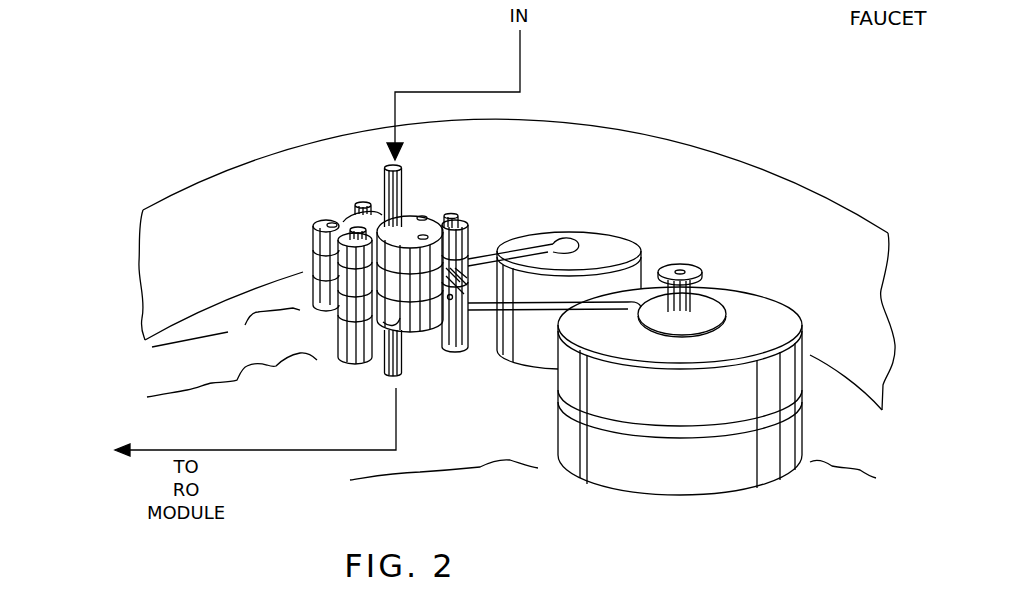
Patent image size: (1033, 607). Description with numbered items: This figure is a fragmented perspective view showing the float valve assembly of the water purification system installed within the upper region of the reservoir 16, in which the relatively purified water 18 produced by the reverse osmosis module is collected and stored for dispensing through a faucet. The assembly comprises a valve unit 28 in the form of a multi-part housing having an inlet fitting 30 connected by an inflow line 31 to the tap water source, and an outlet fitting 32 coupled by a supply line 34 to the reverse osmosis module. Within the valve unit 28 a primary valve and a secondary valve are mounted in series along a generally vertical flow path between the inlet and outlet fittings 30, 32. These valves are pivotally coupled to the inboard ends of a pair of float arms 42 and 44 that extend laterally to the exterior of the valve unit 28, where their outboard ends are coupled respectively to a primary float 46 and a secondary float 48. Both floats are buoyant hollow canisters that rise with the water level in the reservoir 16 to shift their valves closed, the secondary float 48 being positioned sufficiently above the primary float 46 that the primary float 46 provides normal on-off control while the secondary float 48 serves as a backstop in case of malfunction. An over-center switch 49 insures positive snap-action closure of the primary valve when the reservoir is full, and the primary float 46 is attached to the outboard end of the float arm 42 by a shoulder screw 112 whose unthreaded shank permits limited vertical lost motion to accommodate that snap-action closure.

The reservoir 16 is at (828, 204).
The purified water 18 is at (227, 312).
The valve unit 28 is at (317, 214).
The inlet fitting 30 is at (403, 189).
The inflow line 31 is at (521, 70).
The outlet fitting 32 is at (384, 360).
The supply line 34 is at (293, 450).
The float arm 42 is at (541, 316).
The float arm 44 is at (484, 258).
The primary float 46 is at (669, 480).
The secondary float 48 is at (603, 242).
The over-center switch 49 is at (450, 322).
The shoulder screw 112 is at (703, 254).